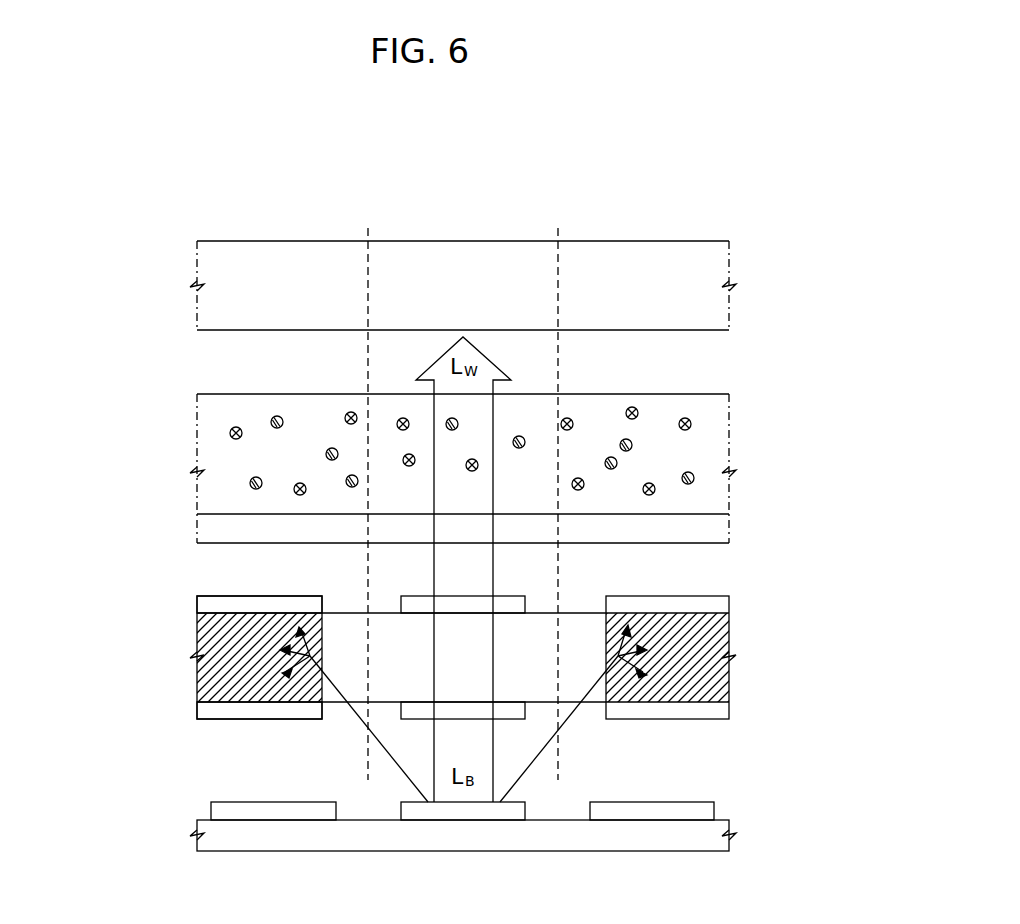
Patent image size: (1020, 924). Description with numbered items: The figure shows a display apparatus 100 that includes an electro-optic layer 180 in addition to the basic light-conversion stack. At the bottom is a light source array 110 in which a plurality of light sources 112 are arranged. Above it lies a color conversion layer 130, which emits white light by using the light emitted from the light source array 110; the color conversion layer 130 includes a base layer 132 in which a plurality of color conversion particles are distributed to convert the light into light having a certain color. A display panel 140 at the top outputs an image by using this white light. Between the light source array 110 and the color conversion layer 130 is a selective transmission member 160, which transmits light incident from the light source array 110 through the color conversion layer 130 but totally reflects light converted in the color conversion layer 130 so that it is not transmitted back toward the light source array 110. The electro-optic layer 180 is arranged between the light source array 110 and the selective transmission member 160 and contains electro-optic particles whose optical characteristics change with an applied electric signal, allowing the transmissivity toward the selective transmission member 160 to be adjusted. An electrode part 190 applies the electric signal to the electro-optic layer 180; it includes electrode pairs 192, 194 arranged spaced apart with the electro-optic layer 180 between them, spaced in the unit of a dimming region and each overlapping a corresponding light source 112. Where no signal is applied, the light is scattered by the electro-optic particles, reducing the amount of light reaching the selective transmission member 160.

The display apparatus 100 is at (723, 207).
The light source array 110 is at (197, 845).
The light source 112 is at (272, 806).
The color conversion layer 130 is at (188, 420).
The base layer 132 is at (197, 453).
The display panel 140 is at (197, 311).
The selective transmission member 160 is at (197, 529).
The electro-optic layer 180 is at (743, 613).
The electrode part 190 is at (122, 597).
The electrode pair (first electrode) 192 is at (197, 605).
The electrode pair (second electrode) 194 is at (197, 711).